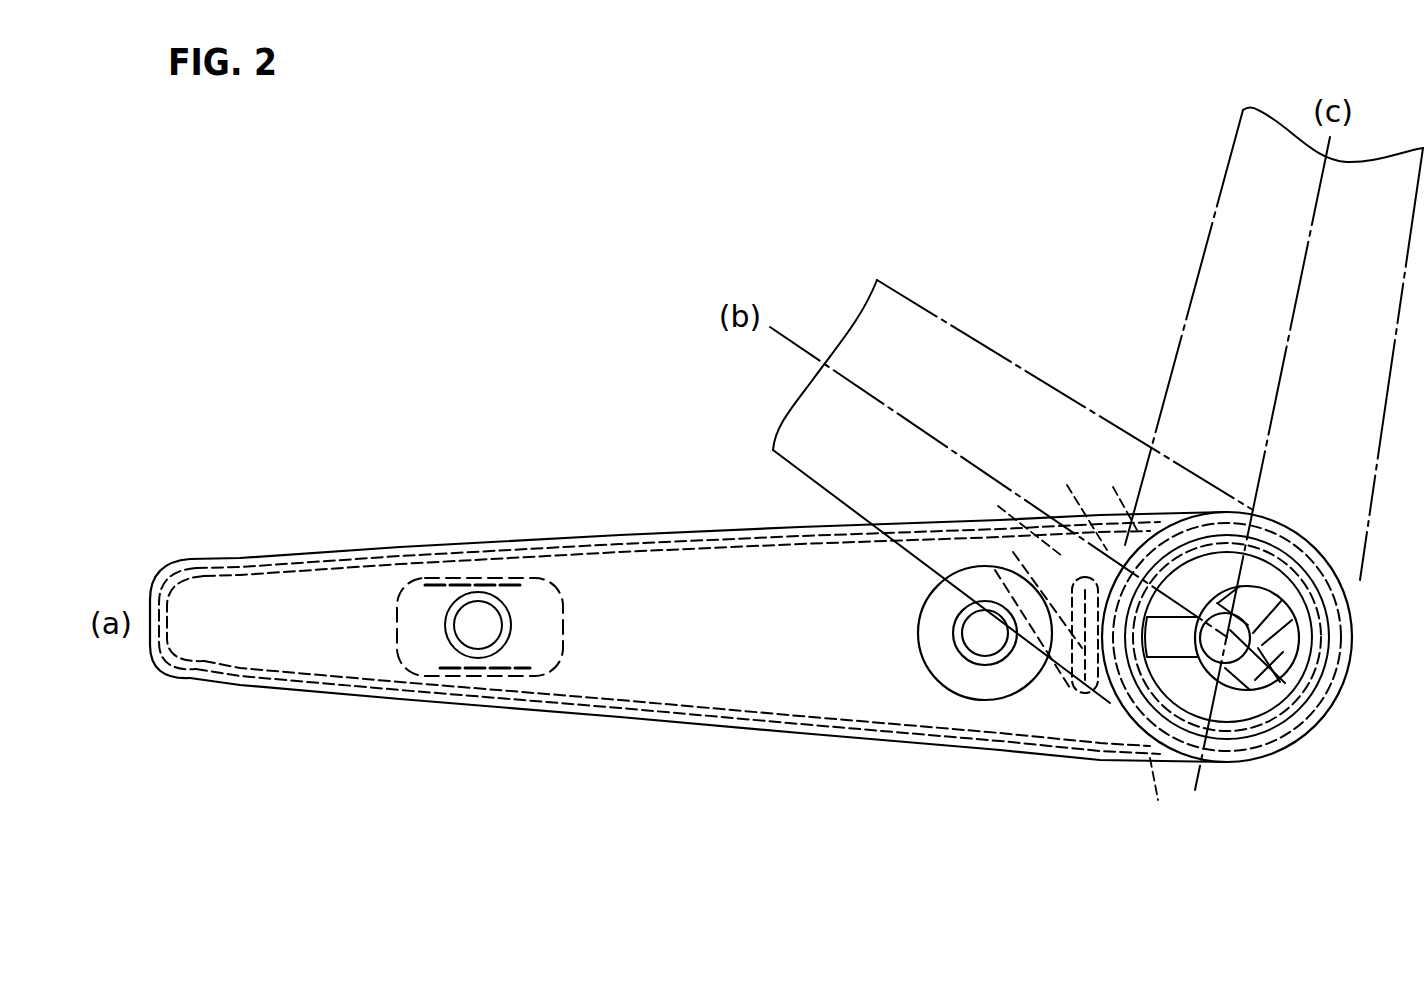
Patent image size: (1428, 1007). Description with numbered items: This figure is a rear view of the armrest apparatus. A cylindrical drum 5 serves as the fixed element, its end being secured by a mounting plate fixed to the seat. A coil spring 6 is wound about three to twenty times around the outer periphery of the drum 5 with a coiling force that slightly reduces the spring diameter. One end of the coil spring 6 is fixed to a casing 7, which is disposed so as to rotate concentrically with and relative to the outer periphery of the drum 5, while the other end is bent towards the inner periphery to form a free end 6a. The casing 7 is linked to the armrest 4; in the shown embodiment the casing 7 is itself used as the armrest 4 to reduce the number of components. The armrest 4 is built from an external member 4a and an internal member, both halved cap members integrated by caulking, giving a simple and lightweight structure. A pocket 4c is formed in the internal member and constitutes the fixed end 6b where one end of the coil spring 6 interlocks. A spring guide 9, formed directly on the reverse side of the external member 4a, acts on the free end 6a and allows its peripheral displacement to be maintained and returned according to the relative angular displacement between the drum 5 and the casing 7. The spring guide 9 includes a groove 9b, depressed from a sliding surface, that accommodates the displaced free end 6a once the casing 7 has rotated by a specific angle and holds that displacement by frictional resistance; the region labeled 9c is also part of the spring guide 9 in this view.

The armrest 4 is at (1064, 768).
The external member 4a is at (1250, 767).
The pocket 4c is at (1036, 613).
The drum 5 is at (1268, 733).
The coil spring 6 is at (1017, 517).
The free end 6a is at (1165, 801).
The fixed end 6b is at (990, 567).
The casing 7 is at (1295, 688).
The spring guide 9 is at (1100, 448).
The groove 9b is at (1071, 499).
The bracket second portion 9c is at (1117, 489).